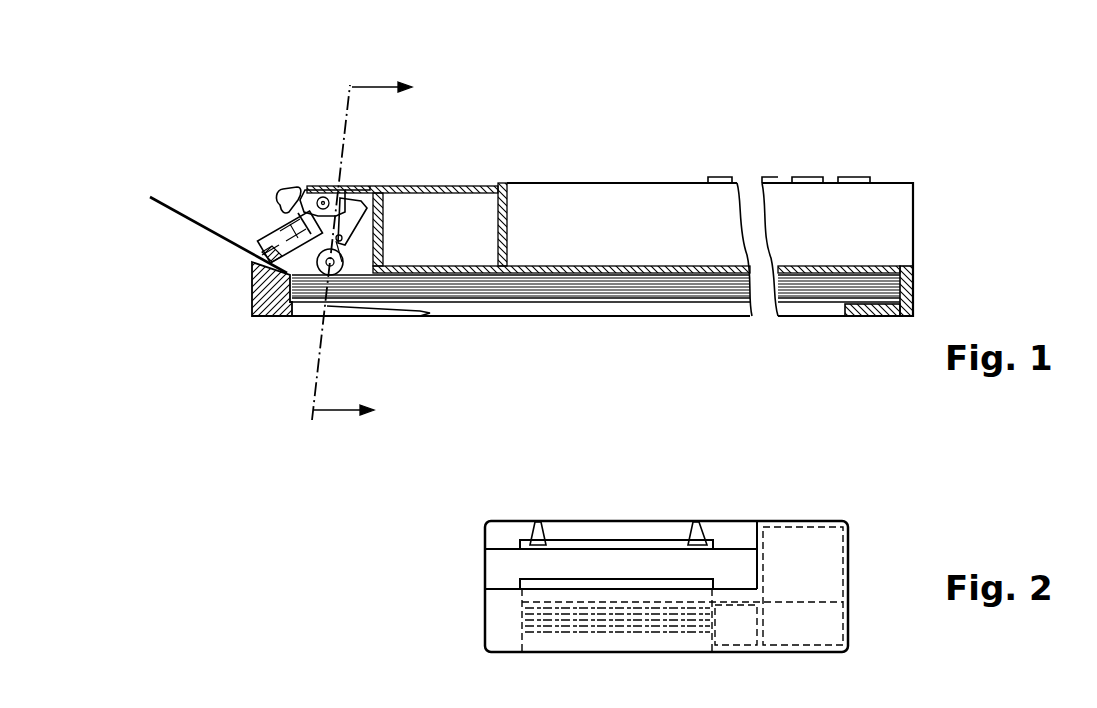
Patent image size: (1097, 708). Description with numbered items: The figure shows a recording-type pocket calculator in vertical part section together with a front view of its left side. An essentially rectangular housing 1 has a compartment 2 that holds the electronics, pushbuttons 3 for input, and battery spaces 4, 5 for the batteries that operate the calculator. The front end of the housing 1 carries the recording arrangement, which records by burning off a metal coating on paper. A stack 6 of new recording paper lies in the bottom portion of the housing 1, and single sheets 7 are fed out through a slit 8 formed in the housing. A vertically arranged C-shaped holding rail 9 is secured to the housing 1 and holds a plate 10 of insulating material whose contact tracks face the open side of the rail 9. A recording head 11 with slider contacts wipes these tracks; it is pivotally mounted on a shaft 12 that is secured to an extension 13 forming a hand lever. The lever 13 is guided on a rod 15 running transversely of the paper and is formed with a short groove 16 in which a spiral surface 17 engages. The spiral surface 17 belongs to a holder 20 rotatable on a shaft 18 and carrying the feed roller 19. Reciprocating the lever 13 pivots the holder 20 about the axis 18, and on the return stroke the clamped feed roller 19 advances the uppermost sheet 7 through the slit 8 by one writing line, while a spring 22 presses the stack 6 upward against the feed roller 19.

In FIG. 1, the housing 1 is at (913, 218).
In FIG. 2, the housing 1 is at (485, 565).
In FIG. 1, the compartment 2 is at (597, 210).
In FIG. 1, the pushbutton 3 is at (808, 177).
In FIG. 1, the battery space 4 is at (468, 218).
In FIG. 2, the battery space 5 is at (795, 540).
In FIG. 1, the stack of recording paper 6 is at (640, 290).
In FIG. 2, the stack of recording paper 6 is at (565, 623).
In FIG. 1, the single sheet of recording paper 7 is at (190, 218).
In FIG. 1, the slit 8 is at (232, 220).
In FIG. 2, the slit 8 is at (632, 585).
In FIG. 1, the C-shaped holding rail 9 is at (253, 308).
In FIG. 1, the plate of insulating material 10 is at (252, 268).
In FIG. 1, the recording head 11 is at (268, 218).
In FIG. 1, the shaft 12 is at (340, 200).
In FIG. 1, the extension (hand lever) 13 is at (292, 187).
In FIG. 2, the extension (hand lever) 13 is at (548, 540).
In FIG. 1, the rod 15 is at (333, 193).
In FIG. 1, the groove 16 is at (357, 200).
In FIG. 1, the spiral surface 17 is at (360, 213).
In FIG. 1, the shaft (pivot axis) 18 is at (307, 250).
In FIG. 1, the feed roller 19 is at (353, 257).
In FIG. 1, the holder 20 is at (337, 243).
In FIG. 1, the spring 22 is at (422, 315).